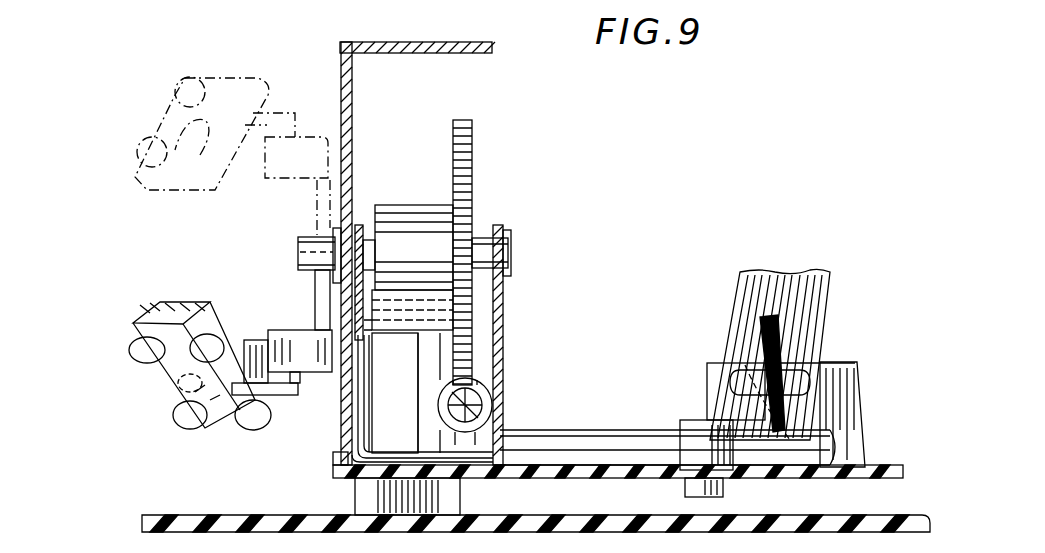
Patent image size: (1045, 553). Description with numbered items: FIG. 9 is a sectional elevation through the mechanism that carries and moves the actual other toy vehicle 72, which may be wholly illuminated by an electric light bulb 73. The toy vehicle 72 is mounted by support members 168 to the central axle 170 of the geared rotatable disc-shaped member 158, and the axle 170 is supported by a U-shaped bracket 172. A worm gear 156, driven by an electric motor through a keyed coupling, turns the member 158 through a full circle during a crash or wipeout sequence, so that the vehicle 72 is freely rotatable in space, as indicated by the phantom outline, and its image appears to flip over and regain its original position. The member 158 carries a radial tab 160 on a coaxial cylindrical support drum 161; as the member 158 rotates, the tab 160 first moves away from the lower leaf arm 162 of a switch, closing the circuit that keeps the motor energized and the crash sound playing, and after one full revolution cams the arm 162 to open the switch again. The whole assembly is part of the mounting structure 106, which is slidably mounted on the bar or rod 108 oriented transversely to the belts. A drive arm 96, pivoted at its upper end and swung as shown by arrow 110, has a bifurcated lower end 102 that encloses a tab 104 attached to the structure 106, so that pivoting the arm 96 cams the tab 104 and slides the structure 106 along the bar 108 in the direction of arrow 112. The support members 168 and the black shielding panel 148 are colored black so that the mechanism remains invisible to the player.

The black colored panel or shielding 148 is at (383, 55).
The geared rotatable disc-shaped member 158 is at (472, 143).
The cylindrical support drum 161 is at (420, 210).
The central axle 170 is at (510, 252).
The U-shaped bracket 172 is at (503, 292).
The radial tab 160 is at (445, 340).
The lower leaf arm 162 is at (390, 338).
The worm gear 156 is at (492, 398).
The support members 168 is at (315, 370).
The toy vehicle 72 is at (225, 428).
The electric light bulb 73 is at (185, 385).
The bar or rod 108 is at (672, 435).
The lower end of the drive arm 102 is at (730, 395).
The drive arm 96 is at (757, 290).
The tab 104 is at (745, 370).
The arrow 110 is at (827, 303).
The arrow 112 is at (548, 367).
The mounting structure 106 is at (705, 220).